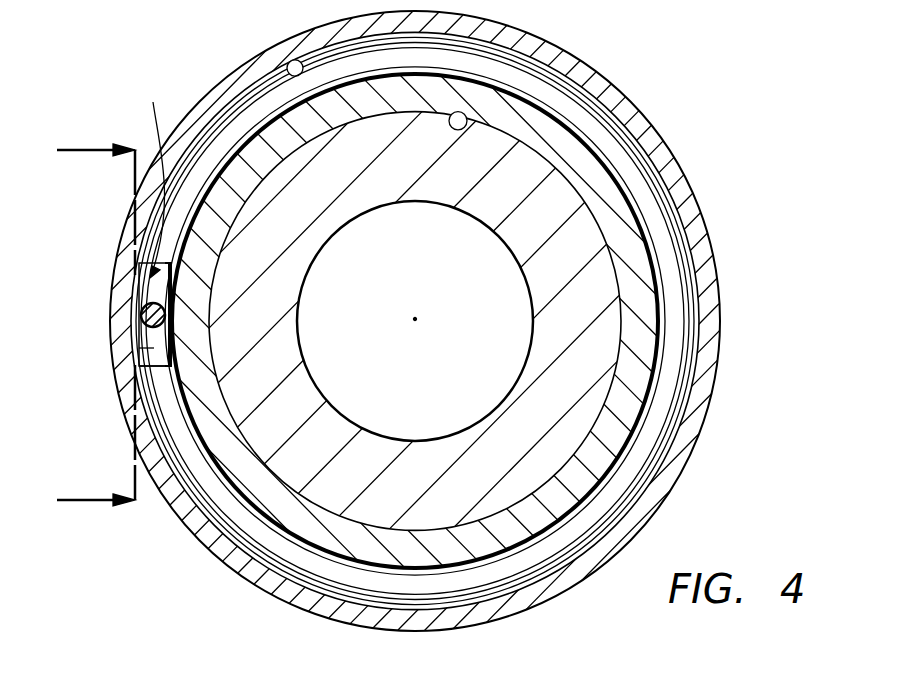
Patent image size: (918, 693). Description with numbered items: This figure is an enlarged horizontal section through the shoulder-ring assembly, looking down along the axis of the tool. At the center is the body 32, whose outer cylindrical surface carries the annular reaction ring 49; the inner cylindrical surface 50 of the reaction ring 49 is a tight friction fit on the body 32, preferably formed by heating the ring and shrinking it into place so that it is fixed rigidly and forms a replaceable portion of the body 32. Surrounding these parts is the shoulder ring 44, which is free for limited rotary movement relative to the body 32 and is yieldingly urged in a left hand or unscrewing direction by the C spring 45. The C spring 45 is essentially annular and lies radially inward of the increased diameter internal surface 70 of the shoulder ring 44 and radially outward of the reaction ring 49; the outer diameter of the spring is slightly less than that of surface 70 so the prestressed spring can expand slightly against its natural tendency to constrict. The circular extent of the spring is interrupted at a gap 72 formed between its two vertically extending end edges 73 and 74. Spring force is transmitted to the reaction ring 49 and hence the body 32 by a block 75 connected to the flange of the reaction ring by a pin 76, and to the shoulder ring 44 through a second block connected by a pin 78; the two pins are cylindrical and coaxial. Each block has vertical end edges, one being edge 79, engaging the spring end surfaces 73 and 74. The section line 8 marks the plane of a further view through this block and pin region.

The section line 8- 8 is at (96, 328).
The body 32 is at (565, 433).
The shoulder ring 44 is at (692, 175).
The C spring 45 is at (672, 297).
The annular reaction ring 49 is at (637, 375).
The inner cylindrical surface 50 is at (470, 120).
The increased diameter internal surface 70 is at (297, 58).
The gap 72 is at (139, 272).
The end edge of the spring 73 is at (176, 358).
The end edge of the spring 74 is at (175, 268).
The block 75 is at (139, 348).
The pin 76 is at (142, 315).
The pin 78 is at (150, 382).
The end edge of block 79 is at (156, 176).